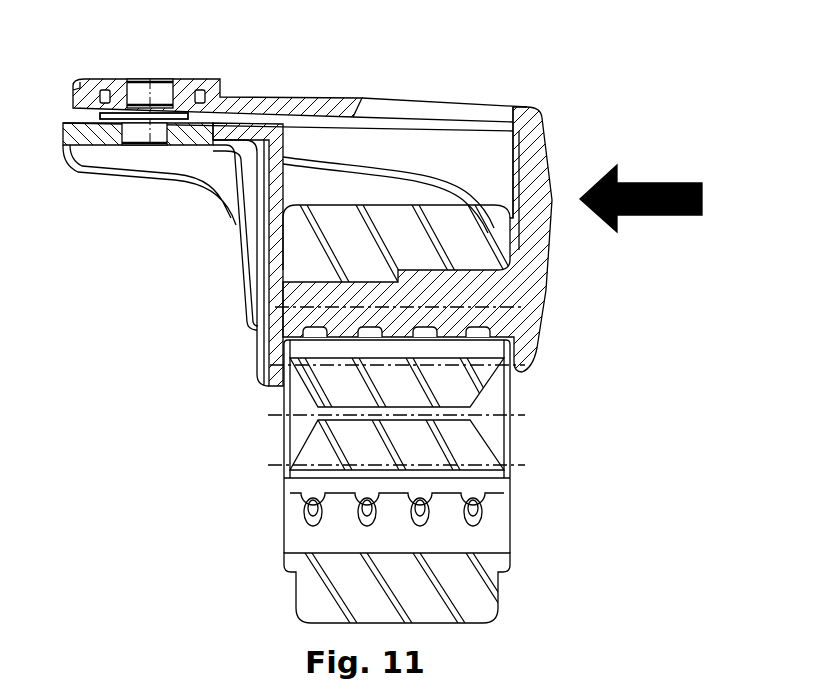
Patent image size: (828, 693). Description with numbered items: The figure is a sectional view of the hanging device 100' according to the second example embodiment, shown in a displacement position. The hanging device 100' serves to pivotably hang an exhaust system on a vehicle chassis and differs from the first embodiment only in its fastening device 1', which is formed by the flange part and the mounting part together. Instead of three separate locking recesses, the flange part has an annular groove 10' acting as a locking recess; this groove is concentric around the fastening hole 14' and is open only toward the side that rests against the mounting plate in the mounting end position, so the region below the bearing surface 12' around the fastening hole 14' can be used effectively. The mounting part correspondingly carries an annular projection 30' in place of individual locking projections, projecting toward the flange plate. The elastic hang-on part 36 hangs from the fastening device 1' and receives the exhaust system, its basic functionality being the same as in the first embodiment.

The fastening device 1' is at (361, 242).
The annular groove 10' is at (217, 73).
The bearing surface 12' is at (130, 55).
The fastening hole 14' is at (163, 74).
The annular projection 30' is at (143, 221).
The elastic hang-on part 36 is at (340, 570).
The hanging device 100' is at (641, 146).